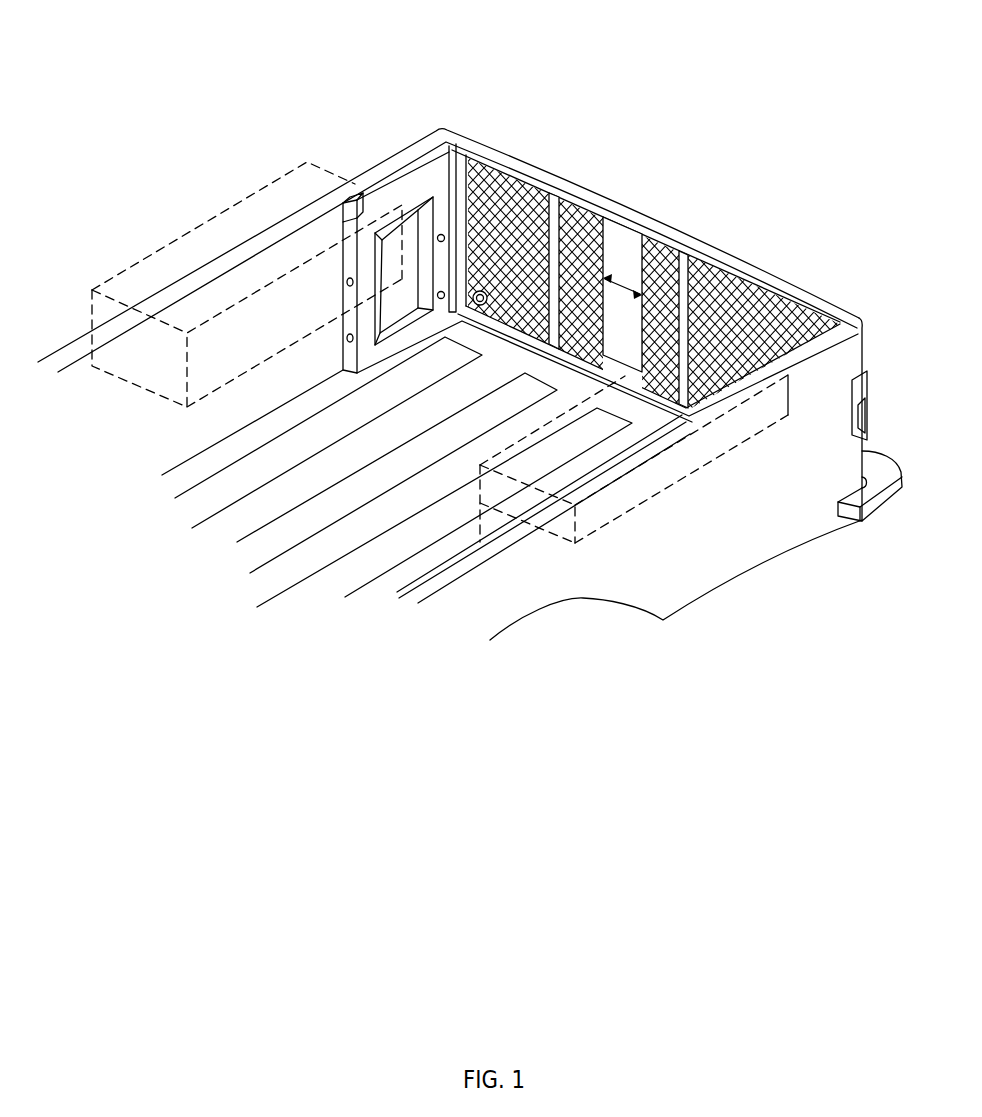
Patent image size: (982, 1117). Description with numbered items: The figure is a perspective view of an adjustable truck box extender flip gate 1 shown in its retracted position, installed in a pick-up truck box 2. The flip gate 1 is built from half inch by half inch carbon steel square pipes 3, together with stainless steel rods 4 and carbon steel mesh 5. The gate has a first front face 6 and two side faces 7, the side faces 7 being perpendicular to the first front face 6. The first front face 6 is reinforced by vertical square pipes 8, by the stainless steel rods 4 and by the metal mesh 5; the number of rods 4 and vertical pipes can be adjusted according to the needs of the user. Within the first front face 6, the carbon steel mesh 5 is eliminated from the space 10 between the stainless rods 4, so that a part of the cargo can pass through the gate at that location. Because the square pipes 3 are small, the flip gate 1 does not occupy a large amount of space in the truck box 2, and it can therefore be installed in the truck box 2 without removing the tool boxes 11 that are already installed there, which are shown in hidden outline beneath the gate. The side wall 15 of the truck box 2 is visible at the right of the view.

The adjustable truck box extender flip gate 1 is at (750, 160).
The pick-up truck box 2 is at (226, 522).
The square pipes 3 is at (711, 250).
The stainless steel rods 4 is at (601, 277).
The carbon steel mesh 5 is at (767, 307).
The first front face 6 is at (648, 292).
The side faces 7 is at (415, 152).
The vertical square pipes 8 is at (530, 200).
The space 10 is at (621, 255).
The tool boxes 11 is at (187, 247).
The side wall 15 is at (698, 573).